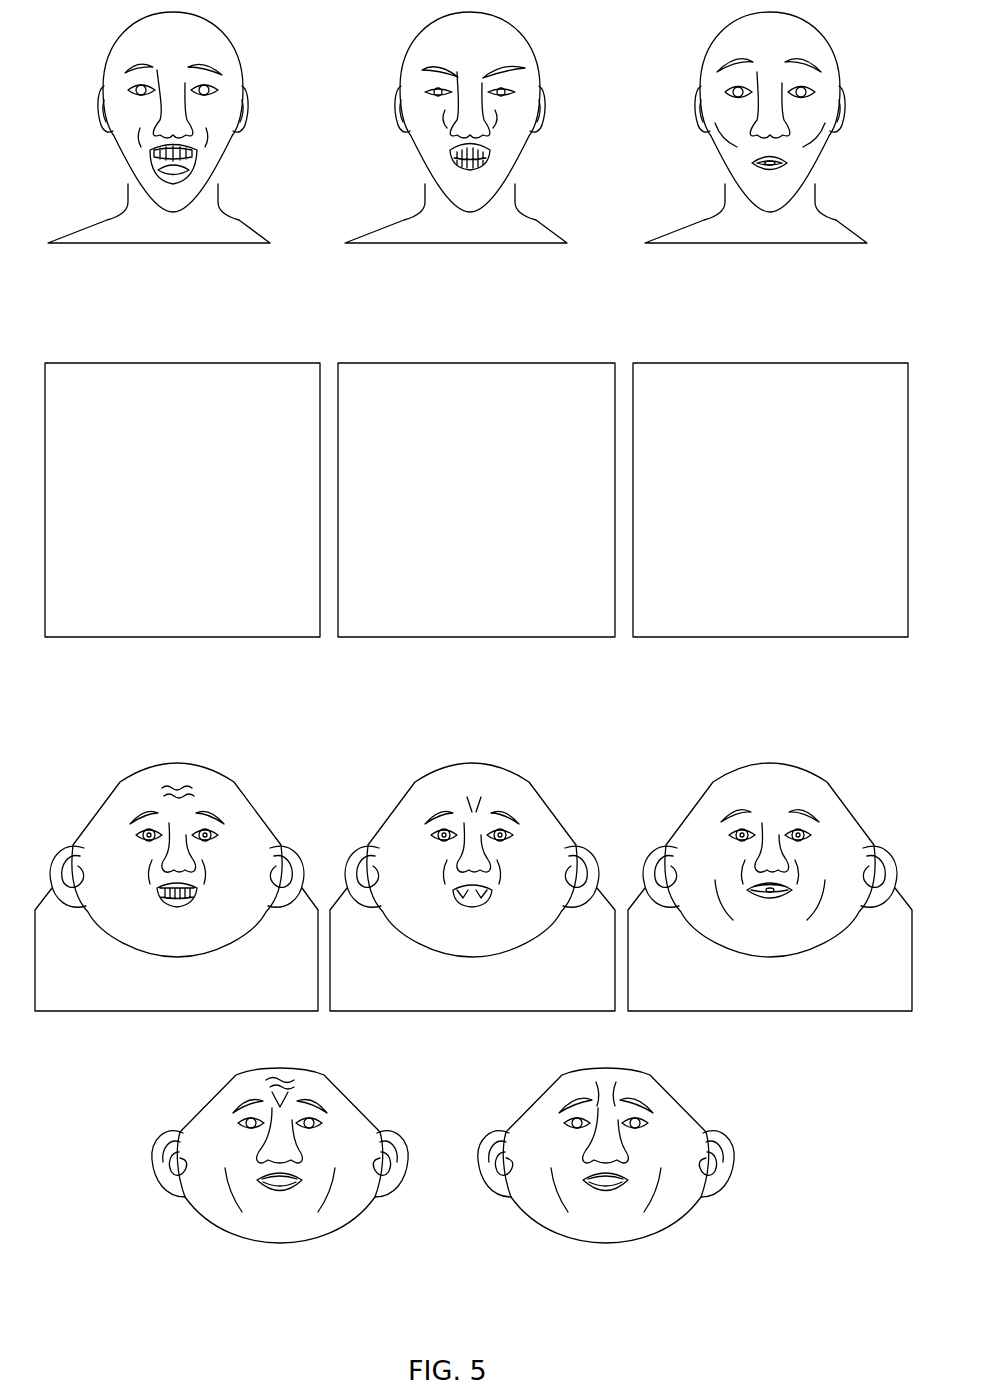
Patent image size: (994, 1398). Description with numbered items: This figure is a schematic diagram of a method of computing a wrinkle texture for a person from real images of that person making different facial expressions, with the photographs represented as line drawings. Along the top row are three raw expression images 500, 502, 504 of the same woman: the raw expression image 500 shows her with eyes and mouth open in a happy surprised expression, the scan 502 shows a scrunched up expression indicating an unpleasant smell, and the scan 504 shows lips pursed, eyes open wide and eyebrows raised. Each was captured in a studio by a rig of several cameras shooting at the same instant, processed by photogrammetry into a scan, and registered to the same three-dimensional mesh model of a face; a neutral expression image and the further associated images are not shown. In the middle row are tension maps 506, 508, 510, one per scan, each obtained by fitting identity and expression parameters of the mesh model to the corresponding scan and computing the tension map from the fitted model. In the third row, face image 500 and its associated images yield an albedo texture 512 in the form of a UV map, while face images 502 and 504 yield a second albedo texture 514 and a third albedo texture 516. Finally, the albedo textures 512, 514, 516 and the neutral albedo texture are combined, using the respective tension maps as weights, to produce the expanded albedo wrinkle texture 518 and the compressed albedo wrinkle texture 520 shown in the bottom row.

The raw expression image 500 is at (307, 230).
The raw expression image 502 is at (603, 230).
The raw expression image 504 is at (900, 230).
The tension map 506 is at (163, 545).
The tension map 508 is at (457, 545).
The tension map 510 is at (751, 545).
The albedo texture 512 is at (307, 992).
The second albedo texture 514 is at (605, 992).
The third albedo texture 516 is at (902, 992).
The expanded albedo wrinkle texture 518 is at (413, 1289).
The compressed albedo wrinkle texture 520 is at (742, 1289).